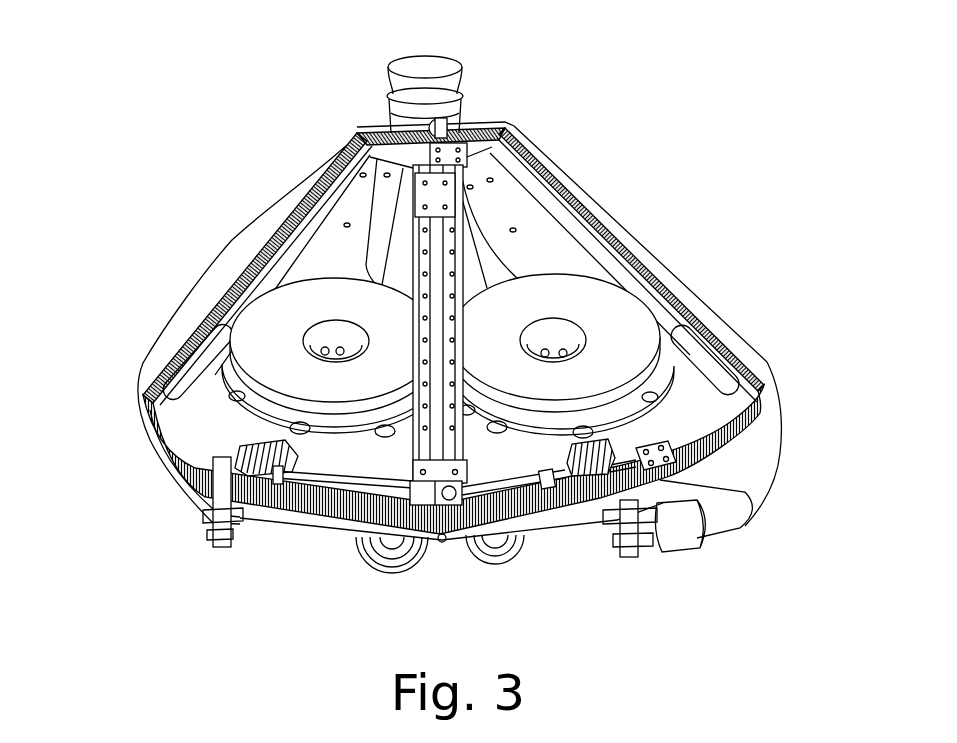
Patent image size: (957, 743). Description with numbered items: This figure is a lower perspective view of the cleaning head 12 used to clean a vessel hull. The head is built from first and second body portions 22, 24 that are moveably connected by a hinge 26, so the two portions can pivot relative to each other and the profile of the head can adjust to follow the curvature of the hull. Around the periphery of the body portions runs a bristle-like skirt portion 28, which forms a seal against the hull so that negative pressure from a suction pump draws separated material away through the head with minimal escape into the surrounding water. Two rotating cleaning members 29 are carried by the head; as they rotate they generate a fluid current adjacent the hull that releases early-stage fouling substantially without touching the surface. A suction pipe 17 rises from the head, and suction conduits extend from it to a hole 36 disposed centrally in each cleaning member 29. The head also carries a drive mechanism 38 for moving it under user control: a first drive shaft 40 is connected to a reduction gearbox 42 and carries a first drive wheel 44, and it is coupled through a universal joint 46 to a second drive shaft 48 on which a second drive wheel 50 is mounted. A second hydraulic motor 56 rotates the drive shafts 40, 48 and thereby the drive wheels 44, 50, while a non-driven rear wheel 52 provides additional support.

The cleaning head 12 is at (730, 178).
The suction pipe 17 is at (434, 78).
The first body portion 22 is at (180, 430).
The second body portion 24 is at (722, 416).
The hinge 26 is at (443, 543).
The skirt portion 28 is at (537, 518).
The cleaning member 29 is at (253, 302).
The hole 36 is at (328, 332).
The drive mechanism 38 is at (400, 452).
The first drive shaft 40 is at (551, 477).
The reduction gearbox 42 is at (663, 450).
The first drive wheel 44 is at (600, 455).
The universal joint 46 is at (420, 487).
The second drive shaft 48 is at (344, 479).
The second drive wheel 50 is at (262, 449).
The non-driven rear wheel 52 is at (446, 128).
The second hydraulic motor 56 is at (681, 538).